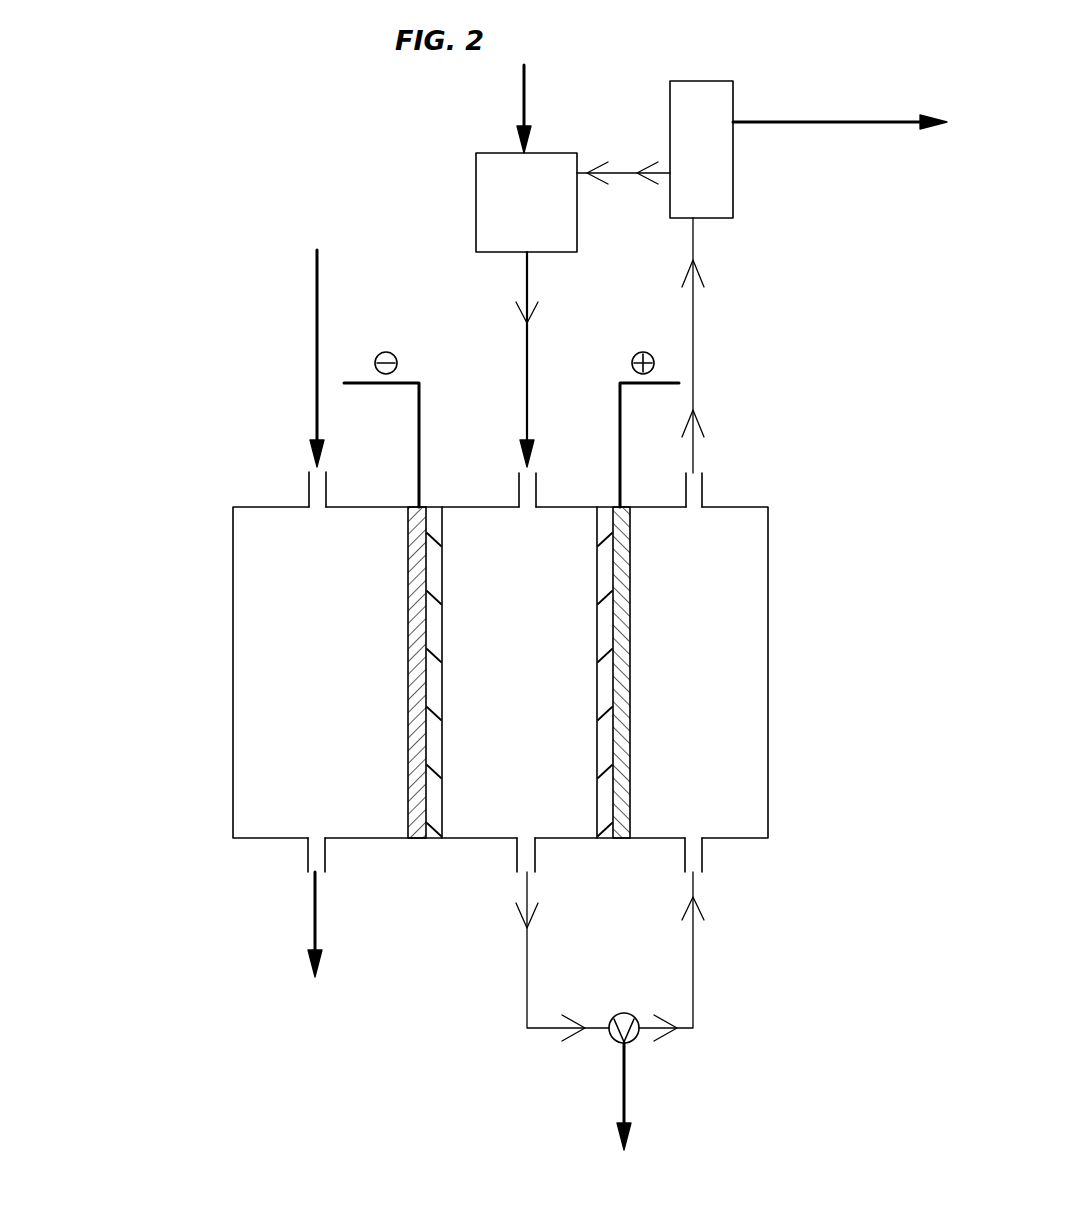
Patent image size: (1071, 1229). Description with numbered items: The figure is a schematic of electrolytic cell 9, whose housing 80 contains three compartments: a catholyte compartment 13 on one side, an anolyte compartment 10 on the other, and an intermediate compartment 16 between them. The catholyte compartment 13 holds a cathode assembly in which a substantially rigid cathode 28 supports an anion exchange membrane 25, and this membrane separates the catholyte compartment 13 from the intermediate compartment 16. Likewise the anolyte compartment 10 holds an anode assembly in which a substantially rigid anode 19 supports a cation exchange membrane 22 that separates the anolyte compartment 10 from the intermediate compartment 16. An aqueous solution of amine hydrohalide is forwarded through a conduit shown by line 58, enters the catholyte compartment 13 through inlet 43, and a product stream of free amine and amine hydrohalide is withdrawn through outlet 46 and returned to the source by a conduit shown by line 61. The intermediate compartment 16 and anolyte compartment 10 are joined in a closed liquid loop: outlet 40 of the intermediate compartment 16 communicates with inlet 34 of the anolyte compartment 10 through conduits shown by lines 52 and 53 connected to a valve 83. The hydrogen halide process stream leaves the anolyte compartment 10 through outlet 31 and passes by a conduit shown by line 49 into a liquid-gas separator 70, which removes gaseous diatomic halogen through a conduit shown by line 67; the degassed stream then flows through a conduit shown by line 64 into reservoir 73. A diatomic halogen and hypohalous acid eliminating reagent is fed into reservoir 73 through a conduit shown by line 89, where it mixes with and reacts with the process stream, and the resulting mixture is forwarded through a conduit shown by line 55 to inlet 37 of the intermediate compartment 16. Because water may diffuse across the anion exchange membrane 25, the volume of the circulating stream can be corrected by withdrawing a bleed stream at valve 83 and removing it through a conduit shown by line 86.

The electrolytic cell 9 is at (135, 964).
The anolyte compartment 10 is at (702, 701).
The catholyte compartment 13 is at (342, 701).
The intermediate compartment 16 is at (530, 701).
The anode 19 is at (618, 840).
The cation exchange membrane 22 is at (600, 840).
The anion exchange membrane 25 is at (433, 839).
The cathode 28 is at (420, 839).
The outlet 31 is at (693, 490).
The inlet 34 is at (700, 858).
The inlet 37 is at (527, 488).
The outlet 40 is at (524, 853).
The inlet 43 is at (315, 490).
The outlet 46 is at (312, 850).
The conduit 49 is at (693, 350).
The conduit 52 is at (548, 1028).
The conduit 53 is at (693, 930).
The conduit 55 is at (527, 364).
The conduit 58 is at (317, 285).
The conduit 61 is at (315, 927).
The conduit 64 is at (613, 172).
The conduit 67 is at (787, 122).
The liquid-gas separator 70 is at (713, 192).
The reservoir 73 is at (502, 205).
The housing 80 is at (768, 762).
The valve 83 is at (637, 1043).
The conduit 86 is at (627, 1097).
The conduit 89 is at (520, 87).